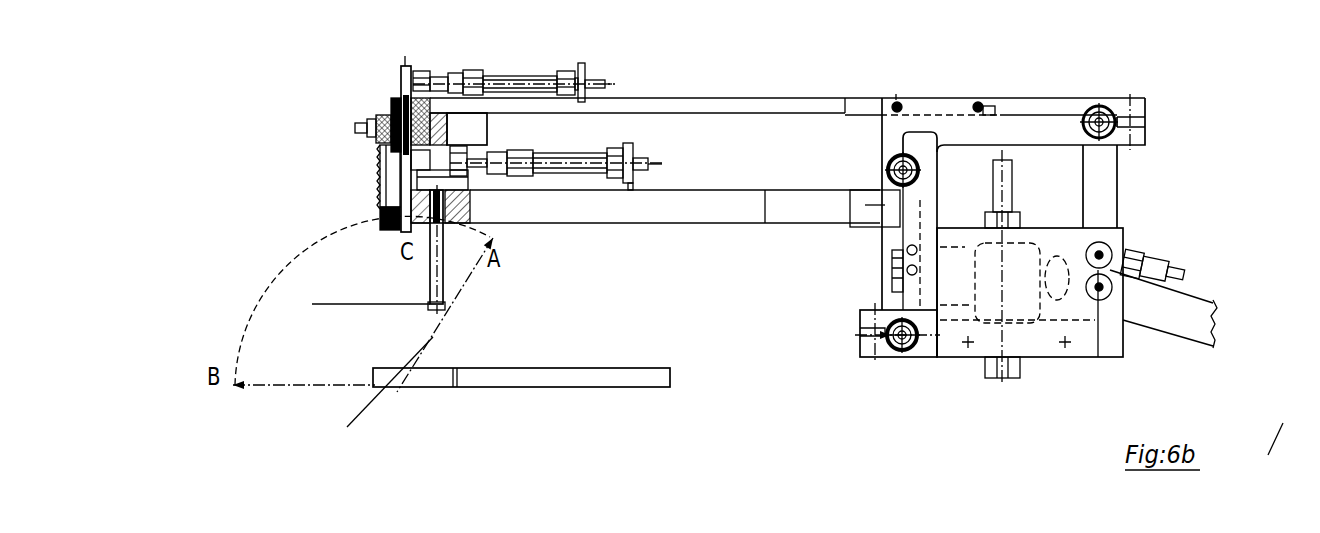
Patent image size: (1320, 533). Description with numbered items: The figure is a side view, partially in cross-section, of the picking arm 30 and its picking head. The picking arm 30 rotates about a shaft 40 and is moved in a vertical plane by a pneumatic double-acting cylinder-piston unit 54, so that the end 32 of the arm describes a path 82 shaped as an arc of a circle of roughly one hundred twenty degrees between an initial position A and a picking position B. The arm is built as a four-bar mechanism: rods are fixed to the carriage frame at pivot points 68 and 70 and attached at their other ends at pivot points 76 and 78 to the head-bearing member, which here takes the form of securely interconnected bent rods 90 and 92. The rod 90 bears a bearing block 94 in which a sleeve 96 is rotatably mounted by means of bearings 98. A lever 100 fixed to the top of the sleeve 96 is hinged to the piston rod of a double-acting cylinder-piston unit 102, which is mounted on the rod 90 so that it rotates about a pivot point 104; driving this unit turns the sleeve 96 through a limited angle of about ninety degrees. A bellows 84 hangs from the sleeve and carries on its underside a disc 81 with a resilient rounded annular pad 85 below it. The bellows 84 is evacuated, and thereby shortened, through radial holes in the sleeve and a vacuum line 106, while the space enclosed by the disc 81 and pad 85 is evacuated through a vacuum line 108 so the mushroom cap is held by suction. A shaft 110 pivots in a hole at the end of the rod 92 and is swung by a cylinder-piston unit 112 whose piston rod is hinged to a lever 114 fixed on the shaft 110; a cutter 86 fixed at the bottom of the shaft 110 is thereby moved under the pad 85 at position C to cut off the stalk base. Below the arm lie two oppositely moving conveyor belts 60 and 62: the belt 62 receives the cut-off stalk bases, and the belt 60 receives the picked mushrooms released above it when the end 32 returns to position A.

The picking arm 30 is at (735, 313).
The end of the picking arm 32 is at (347, 73).
The shaft 40 is at (995, 152).
The pneumatic double-acting cylinder-piston unit 54 is at (1190, 312).
The conveyor belt 60 is at (573, 380).
The conveyor belt 62 is at (347, 427).
The pivot point 68 is at (900, 357).
The pivot point 70 is at (1135, 252).
The pivot point 76 is at (893, 157).
The pivot point 78 is at (1087, 103).
The disc 81 is at (378, 202).
The path 82 is at (277, 278).
The bellows 84 is at (380, 180).
The resilient rounded annular pad 85 is at (378, 223).
The cutter 86 is at (347, 307).
The bent rod 90 is at (760, 107).
The bent rod 92 is at (682, 202).
The bearing block 94 is at (485, 132).
The sleeve 96 is at (378, 155).
The bearings 98 is at (390, 98).
The lever 100 is at (433, 82).
The double-acting cylinder-piston unit 102 is at (505, 83).
The pivot point 104 is at (588, 68).
The vacuum line 106 is at (348, 127).
The vacuum line 108 is at (410, 70).
The shaft 110 is at (440, 277).
The cylinder-piston unit 112 is at (588, 163).
The lever 114 is at (493, 210).